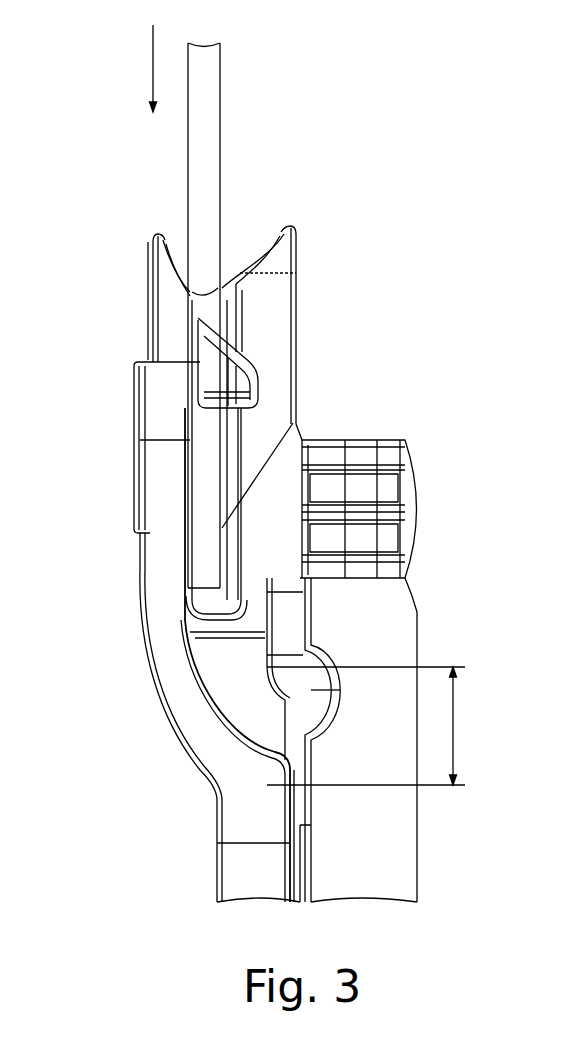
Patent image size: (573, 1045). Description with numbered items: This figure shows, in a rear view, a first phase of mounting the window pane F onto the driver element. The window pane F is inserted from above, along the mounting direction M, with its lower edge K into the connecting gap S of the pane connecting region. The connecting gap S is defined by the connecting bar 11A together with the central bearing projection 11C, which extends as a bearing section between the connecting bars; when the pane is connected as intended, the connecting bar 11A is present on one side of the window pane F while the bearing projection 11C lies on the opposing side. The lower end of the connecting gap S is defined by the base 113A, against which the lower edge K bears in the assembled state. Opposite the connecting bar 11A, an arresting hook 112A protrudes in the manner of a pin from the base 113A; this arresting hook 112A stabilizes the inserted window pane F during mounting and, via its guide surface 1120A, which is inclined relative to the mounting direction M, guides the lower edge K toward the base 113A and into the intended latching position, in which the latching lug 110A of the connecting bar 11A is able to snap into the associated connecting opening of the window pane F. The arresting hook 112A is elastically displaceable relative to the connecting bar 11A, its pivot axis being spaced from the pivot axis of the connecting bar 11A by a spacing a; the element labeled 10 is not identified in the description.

The window pane F is at (207, 82).
The mounting direction M is at (141, 68).
The lower edge K is at (222, 283).
The connecting bar 11A is at (170, 322).
The bearing projection 11C is at (298, 290).
The latching lug 110A is at (258, 372).
The connecting gap S is at (200, 463).
The guide surface 1120A is at (258, 470).
The arresting hook 112A is at (258, 542).
The base 113A is at (203, 600).
The spacing a is at (369, 726).
The housing 10 is at (432, 861).